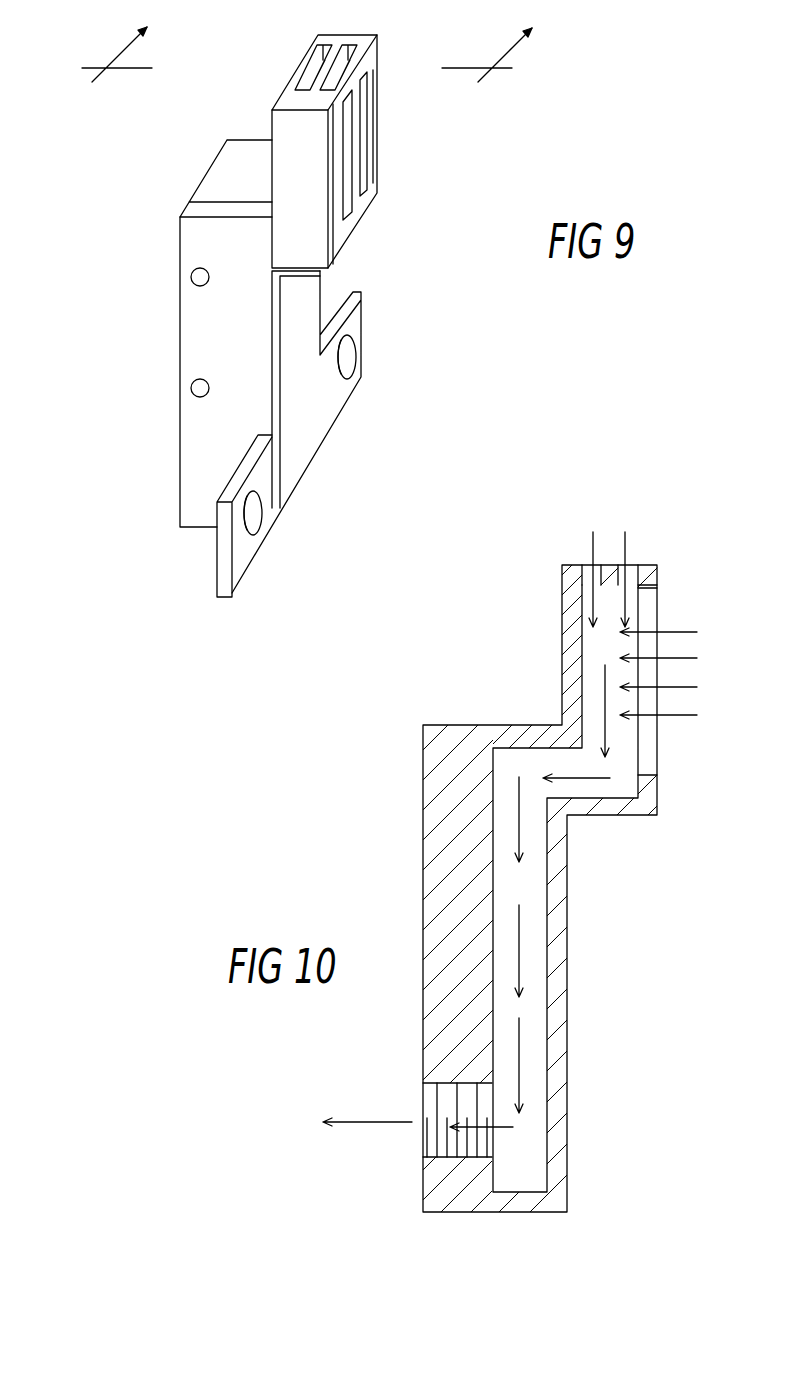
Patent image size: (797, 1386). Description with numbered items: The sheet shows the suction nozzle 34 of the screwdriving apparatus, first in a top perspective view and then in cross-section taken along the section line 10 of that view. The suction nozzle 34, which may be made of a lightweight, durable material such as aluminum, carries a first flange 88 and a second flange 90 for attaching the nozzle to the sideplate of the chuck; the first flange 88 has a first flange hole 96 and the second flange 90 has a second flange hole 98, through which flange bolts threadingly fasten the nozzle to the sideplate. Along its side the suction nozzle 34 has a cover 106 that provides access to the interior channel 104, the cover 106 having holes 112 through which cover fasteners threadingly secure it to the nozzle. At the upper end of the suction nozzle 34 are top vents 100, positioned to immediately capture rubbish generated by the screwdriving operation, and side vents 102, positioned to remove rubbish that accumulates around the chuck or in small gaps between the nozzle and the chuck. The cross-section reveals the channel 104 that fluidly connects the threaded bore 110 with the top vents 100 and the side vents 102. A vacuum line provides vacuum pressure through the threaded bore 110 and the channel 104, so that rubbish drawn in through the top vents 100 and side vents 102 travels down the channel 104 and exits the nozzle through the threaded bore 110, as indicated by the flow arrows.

In FIG. 9, the section line 10- 10 is at (287, 73).
In FIG. 9, the suction nozzle 34 is at (210, 165).
In FIG. 10, the suction nozzle 34 is at (512, 725).
In FIG. 9, the first flange 88 is at (363, 320).
In FIG. 9, the second flange 90 is at (218, 572).
In FIG. 9, the first flange hole 96 is at (350, 358).
In FIG. 9, the second flange hole 98 is at (255, 525).
In FIG. 9, the top vents 100 is at (317, 60).
In FIG. 10, the top vents 100 is at (587, 570).
In FIG. 9, the side vents 102 is at (373, 202).
In FIG. 10, the side vents 102 is at (648, 613).
In FIG. 10, the channel 104 is at (528, 942).
In FIG. 9, the cover 106 is at (242, 348).
In FIG. 10, the threaded bore 110 is at (450, 1097).
In FIG. 9, the holes 112 is at (198, 268).